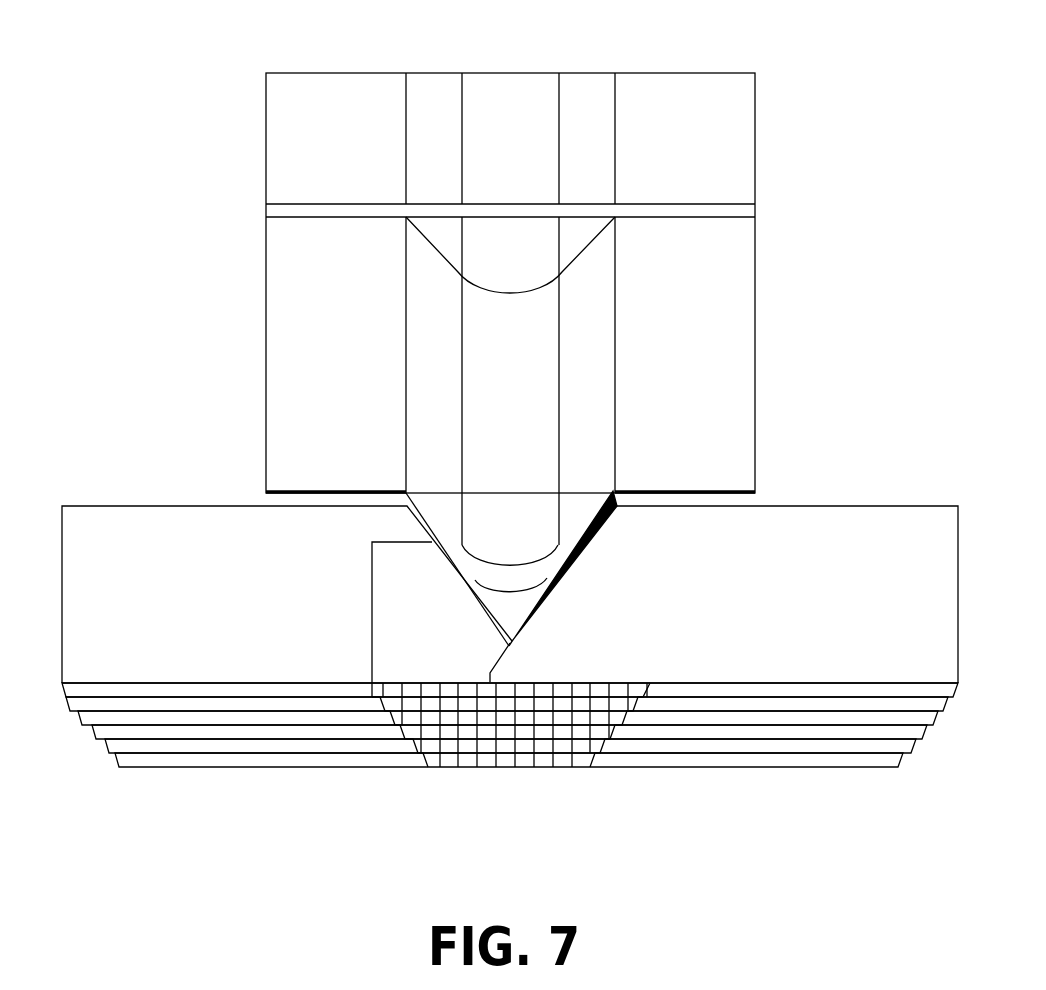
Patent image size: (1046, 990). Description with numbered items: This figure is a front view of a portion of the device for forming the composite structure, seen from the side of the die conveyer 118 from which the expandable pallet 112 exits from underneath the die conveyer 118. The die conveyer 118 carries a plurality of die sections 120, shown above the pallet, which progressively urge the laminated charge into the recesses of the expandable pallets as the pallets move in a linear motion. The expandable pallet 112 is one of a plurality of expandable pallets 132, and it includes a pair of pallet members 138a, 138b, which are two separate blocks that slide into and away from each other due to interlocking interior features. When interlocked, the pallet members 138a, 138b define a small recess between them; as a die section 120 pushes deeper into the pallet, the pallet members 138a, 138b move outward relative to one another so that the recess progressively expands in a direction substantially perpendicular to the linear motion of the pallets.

The die conveyer 118 is at (446, 284).
The die sections 120 is at (263, 303).
The expandable pallets 132 is at (500, 601).
The expandable pallet 112 is at (220, 507).
The pallet member 138a is at (333, 683).
The pallet member 138b is at (688, 683).